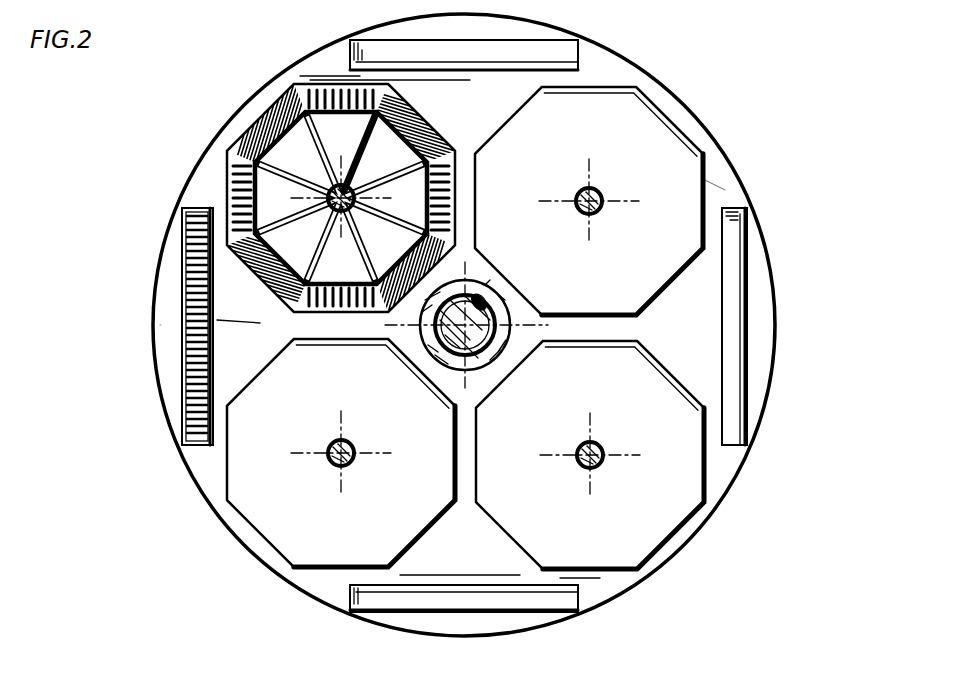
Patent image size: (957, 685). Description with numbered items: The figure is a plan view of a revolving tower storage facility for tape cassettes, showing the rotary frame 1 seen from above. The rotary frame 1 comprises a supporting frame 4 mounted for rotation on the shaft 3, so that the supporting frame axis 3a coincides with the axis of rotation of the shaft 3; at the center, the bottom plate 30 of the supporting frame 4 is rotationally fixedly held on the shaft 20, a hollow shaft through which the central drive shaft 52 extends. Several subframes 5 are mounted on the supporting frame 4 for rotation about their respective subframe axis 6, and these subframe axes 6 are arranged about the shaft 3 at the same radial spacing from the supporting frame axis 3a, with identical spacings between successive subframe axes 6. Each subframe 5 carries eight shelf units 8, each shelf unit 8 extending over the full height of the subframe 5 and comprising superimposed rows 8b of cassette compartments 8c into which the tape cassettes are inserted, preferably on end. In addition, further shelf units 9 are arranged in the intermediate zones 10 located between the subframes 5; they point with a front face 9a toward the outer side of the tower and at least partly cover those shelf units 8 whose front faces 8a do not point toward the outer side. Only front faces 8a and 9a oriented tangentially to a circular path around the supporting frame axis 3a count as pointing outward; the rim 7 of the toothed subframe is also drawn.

The rotary frame 1 is at (180, 508).
The shaft 3 is at (490, 303).
The supporting frame axis 3a is at (500, 375).
The supporting frame 4 is at (263, 550).
The subframe 5 is at (210, 190).
The subframe axis 6 is at (603, 460).
The gear rim 7 is at (297, 85).
The shelf unit 8 is at (343, 225).
The front face 8a is at (243, 133).
The row 8b is at (353, 320).
The cassette compartment 8c is at (345, 85).
The further shelf unit 9 is at (745, 272).
The front face 9a is at (182, 258).
The intermediate zone 10 is at (217, 320).
The shaft 20 is at (507, 340).
The bottom plate 30 is at (723, 185).
The central drive shaft 52 is at (474, 298).